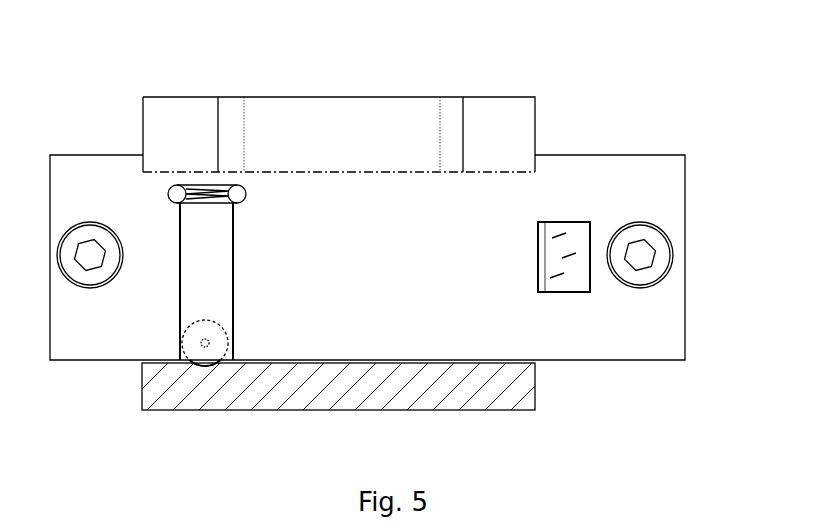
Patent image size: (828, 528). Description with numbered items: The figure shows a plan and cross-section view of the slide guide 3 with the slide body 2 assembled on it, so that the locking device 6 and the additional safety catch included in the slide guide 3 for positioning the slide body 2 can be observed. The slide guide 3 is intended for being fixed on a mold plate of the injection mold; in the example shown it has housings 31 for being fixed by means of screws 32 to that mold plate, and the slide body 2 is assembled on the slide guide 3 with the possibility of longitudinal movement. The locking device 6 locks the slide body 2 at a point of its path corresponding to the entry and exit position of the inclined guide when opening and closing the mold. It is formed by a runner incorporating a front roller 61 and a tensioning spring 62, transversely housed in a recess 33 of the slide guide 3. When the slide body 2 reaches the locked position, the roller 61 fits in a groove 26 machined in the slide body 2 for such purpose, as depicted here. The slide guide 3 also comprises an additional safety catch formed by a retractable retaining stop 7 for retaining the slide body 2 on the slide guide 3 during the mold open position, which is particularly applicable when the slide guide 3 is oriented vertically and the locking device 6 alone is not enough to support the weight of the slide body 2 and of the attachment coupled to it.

The slide body 2 is at (325, 385).
The slide guide 3 is at (655, 323).
The locking device 6 is at (183, 195).
The retractable retaining stop 7 is at (565, 222).
The groove 26 is at (207, 368).
The housings 31 is at (78, 224).
The screws 32 is at (93, 250).
The recess 33 is at (236, 256).
The front roller 61 is at (178, 318).
The tensioning spring 62 is at (233, 187).